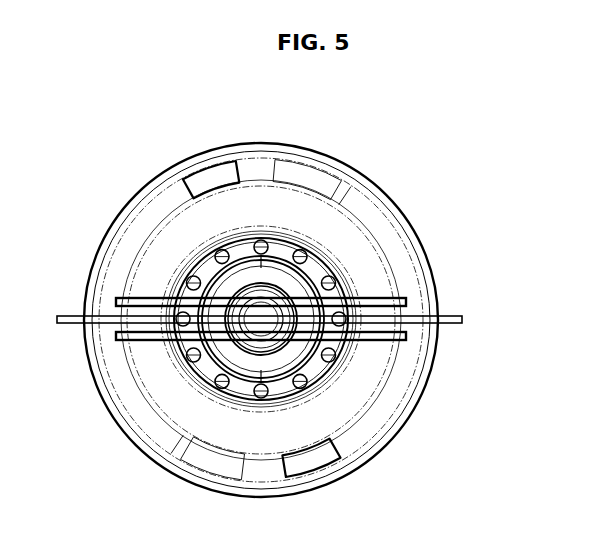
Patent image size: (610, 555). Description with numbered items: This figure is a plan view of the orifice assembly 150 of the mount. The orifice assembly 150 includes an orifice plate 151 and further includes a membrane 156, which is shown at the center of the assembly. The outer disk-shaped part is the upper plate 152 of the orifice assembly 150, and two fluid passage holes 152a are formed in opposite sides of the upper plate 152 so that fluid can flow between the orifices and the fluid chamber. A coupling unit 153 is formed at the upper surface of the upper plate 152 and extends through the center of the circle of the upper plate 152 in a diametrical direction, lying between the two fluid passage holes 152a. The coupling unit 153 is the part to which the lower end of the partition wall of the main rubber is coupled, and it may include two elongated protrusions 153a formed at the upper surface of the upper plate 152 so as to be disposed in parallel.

The orifice assembly 150 is at (452, 276).
The orifice plate 151 is at (261, 320).
The upper plate 152 is at (388, 372).
The fluid passage holes 152a is at (207, 178).
The coupling unit 153 is at (373, 302).
The elongated protrusions 153a is at (406, 300).
The membrane 156 is at (217, 270).